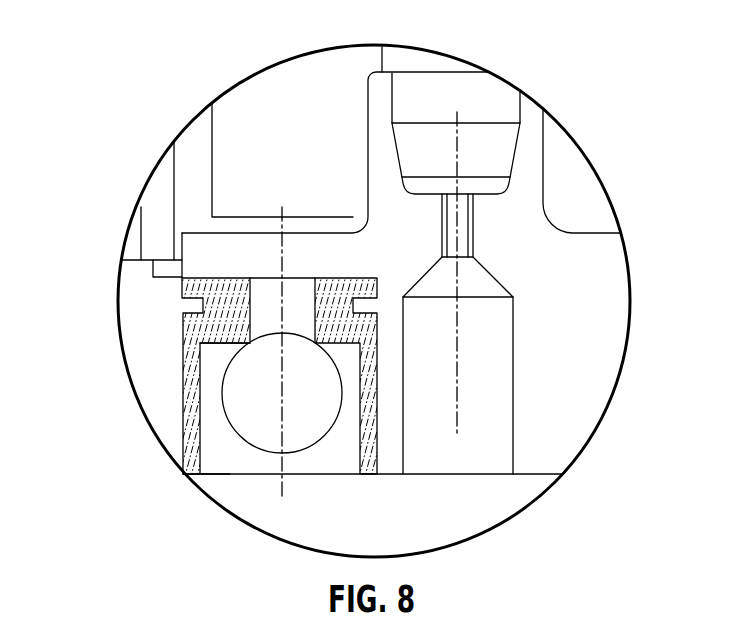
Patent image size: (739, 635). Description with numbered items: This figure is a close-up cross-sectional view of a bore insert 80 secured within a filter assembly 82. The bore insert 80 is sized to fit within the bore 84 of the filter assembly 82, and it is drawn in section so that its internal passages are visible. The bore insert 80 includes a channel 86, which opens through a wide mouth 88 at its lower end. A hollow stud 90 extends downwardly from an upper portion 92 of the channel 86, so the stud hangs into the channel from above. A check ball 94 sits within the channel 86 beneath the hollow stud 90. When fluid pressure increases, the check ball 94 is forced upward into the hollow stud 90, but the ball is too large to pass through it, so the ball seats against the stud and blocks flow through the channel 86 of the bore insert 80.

The bore insert 80 is at (178, 378).
The filter assembly 82 is at (122, 323).
The bore 84 is at (263, 295).
The channel 86 is at (216, 466).
The wide mouth 88 is at (337, 465).
The hollow stud 90 is at (232, 342).
The upper portion 92 is at (297, 298).
The check ball 94 is at (258, 448).